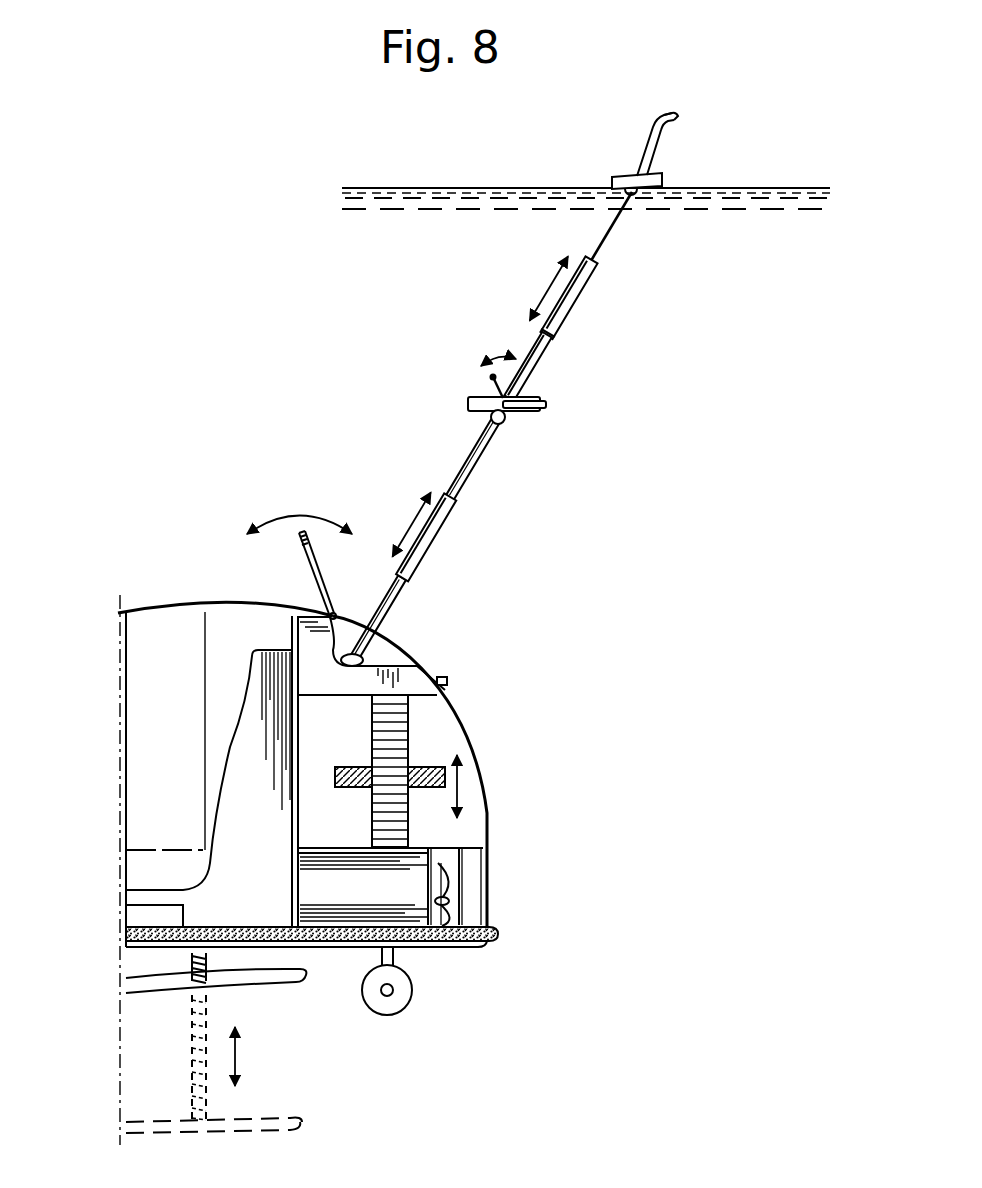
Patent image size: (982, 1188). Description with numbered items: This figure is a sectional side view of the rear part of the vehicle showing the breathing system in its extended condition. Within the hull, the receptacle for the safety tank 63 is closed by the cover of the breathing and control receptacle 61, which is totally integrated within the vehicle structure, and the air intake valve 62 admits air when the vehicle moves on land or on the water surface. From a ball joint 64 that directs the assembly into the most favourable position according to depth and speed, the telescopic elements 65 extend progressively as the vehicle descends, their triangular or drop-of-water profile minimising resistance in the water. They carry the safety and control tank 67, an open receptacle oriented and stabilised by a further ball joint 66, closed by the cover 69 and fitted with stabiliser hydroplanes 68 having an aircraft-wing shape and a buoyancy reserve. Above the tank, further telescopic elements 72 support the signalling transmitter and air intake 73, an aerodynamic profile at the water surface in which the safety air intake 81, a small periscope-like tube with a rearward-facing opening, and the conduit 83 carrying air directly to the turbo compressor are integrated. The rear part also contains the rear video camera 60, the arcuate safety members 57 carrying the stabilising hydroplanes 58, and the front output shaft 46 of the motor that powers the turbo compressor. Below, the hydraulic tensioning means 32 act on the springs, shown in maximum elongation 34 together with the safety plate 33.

The hydraulic tensioning means 32 is at (190, 1037).
The safety plate 33 is at (219, 1128).
The springs in maximum elongation 34 is at (190, 1100).
The front output shaft 46 is at (453, 934).
The arcuate safety members 57 is at (400, 745).
The stabilising hydroplanes 58 is at (440, 836).
The rear video camera 60 is at (448, 684).
The cover of the breathing and control receptacle 61 is at (300, 558).
The air intake valve 62 is at (317, 590).
The receptacle for the safety tank 63 is at (348, 635).
The ball joint 64 is at (380, 653).
The telescopic elements 65 is at (446, 521).
The ball joint 66 is at (507, 420).
The safety and control tank 67 is at (468, 406).
The stabiliser hydroplanes 68 is at (545, 403).
The cover for the safety and control tank 69 is at (500, 392).
The telescopic elements 72 is at (578, 290).
The signalling transmitter and air intake 73 is at (661, 181).
The safety air intake 81 is at (676, 116).
The conduit 83 is at (650, 150).